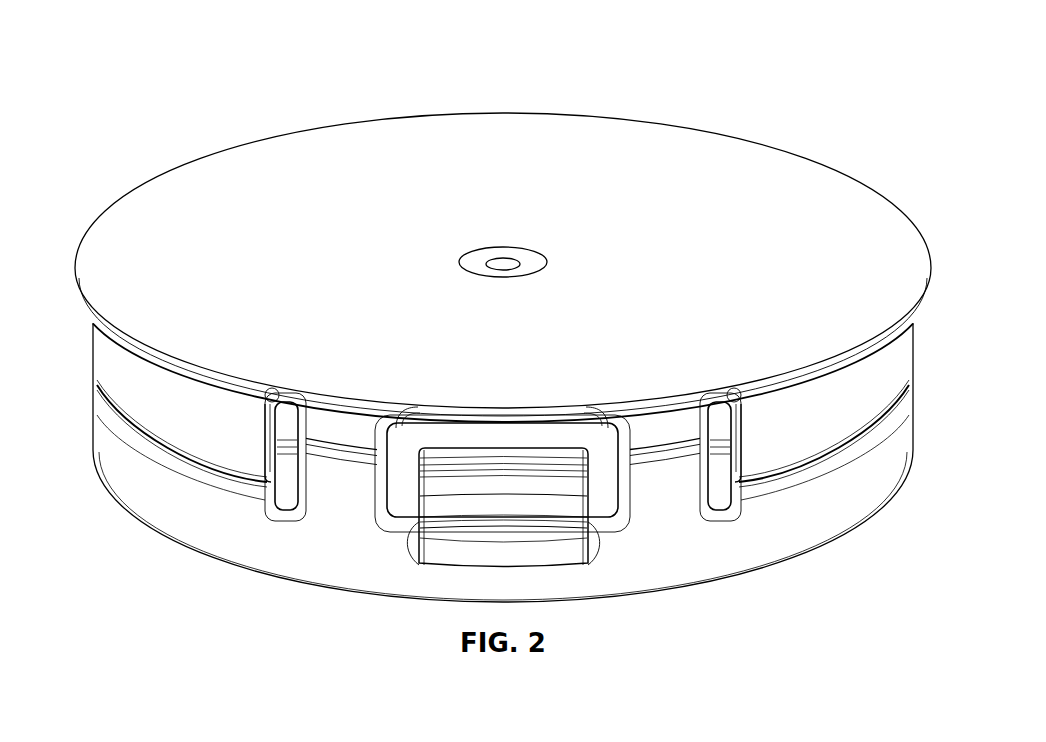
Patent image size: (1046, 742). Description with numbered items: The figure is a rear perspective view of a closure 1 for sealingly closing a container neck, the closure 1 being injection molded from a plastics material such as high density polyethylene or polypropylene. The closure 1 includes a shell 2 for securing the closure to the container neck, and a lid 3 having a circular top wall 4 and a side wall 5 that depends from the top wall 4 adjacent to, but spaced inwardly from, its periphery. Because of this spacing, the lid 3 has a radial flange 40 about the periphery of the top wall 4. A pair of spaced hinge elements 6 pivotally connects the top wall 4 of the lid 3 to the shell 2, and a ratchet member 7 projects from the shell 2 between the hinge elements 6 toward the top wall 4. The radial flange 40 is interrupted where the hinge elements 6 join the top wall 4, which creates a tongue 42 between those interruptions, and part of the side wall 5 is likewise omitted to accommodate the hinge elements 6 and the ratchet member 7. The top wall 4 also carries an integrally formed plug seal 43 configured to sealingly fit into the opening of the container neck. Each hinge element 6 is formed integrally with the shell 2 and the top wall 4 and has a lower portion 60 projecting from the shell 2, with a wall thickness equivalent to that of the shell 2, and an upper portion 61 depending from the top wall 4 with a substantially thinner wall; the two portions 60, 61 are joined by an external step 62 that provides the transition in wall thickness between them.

The closure 1 is at (836, 70).
The shell 2 is at (800, 528).
The lid 3 is at (105, 180).
The top wall 4 is at (493, 228).
The side wall 5 is at (190, 438).
The hinge elements 6 is at (675, 278).
The ratchet member 7 is at (610, 501).
The radial flange 40 is at (917, 258).
The tongue 42 is at (503, 408).
The plug seal 43 is at (412, 443).
The lower portion 60 is at (668, 485).
The upper portion 61 is at (640, 432).
The external step 62 is at (657, 453).